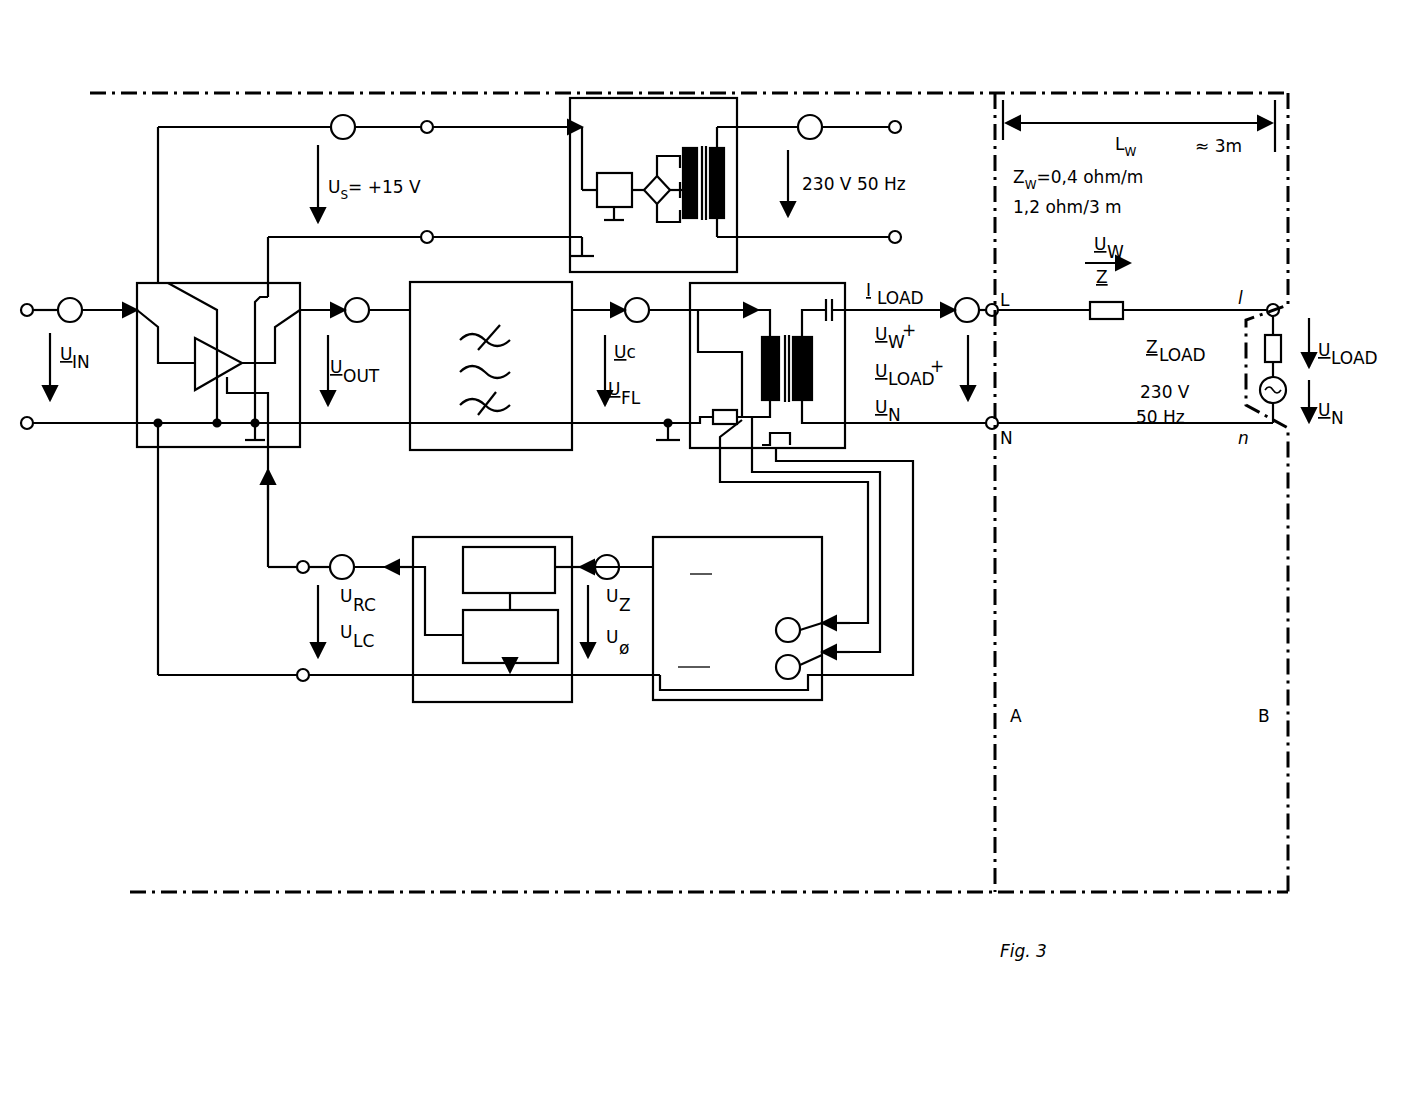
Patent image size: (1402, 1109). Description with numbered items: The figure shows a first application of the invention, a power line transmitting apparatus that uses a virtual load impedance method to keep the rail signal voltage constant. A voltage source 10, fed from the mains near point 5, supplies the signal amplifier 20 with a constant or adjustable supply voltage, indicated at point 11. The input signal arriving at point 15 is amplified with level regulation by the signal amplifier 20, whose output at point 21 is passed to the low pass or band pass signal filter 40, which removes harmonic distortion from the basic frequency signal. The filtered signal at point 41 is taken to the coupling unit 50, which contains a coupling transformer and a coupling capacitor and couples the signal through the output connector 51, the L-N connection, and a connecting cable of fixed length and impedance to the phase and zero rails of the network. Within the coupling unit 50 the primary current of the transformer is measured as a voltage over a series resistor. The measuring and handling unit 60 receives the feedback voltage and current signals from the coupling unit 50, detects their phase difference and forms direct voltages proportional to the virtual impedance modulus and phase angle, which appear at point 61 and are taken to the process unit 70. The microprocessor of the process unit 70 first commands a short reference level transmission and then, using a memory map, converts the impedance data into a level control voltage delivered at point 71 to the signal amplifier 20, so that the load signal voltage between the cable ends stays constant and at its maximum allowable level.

The mains input measuring point 5 is at (820, 118).
The voltage source 10 is at (653, 185).
The supply voltage measuring point 11 is at (356, 119).
The input voltage measuring point 15 is at (70, 299).
The signal amplifier 20 is at (218, 365).
The amplifier output measuring point 21 is at (357, 300).
The signal filter 40 is at (491, 366).
The filter output measuring point 41 is at (637, 299).
The coupling unit 50 is at (767, 365).
The output connector 51 is at (960, 299).
The measuring and handling unit 60 is at (737, 618).
The impedance signal point 61 is at (614, 557).
The process unit 70 is at (492, 619).
The control signal point 71 is at (348, 557).